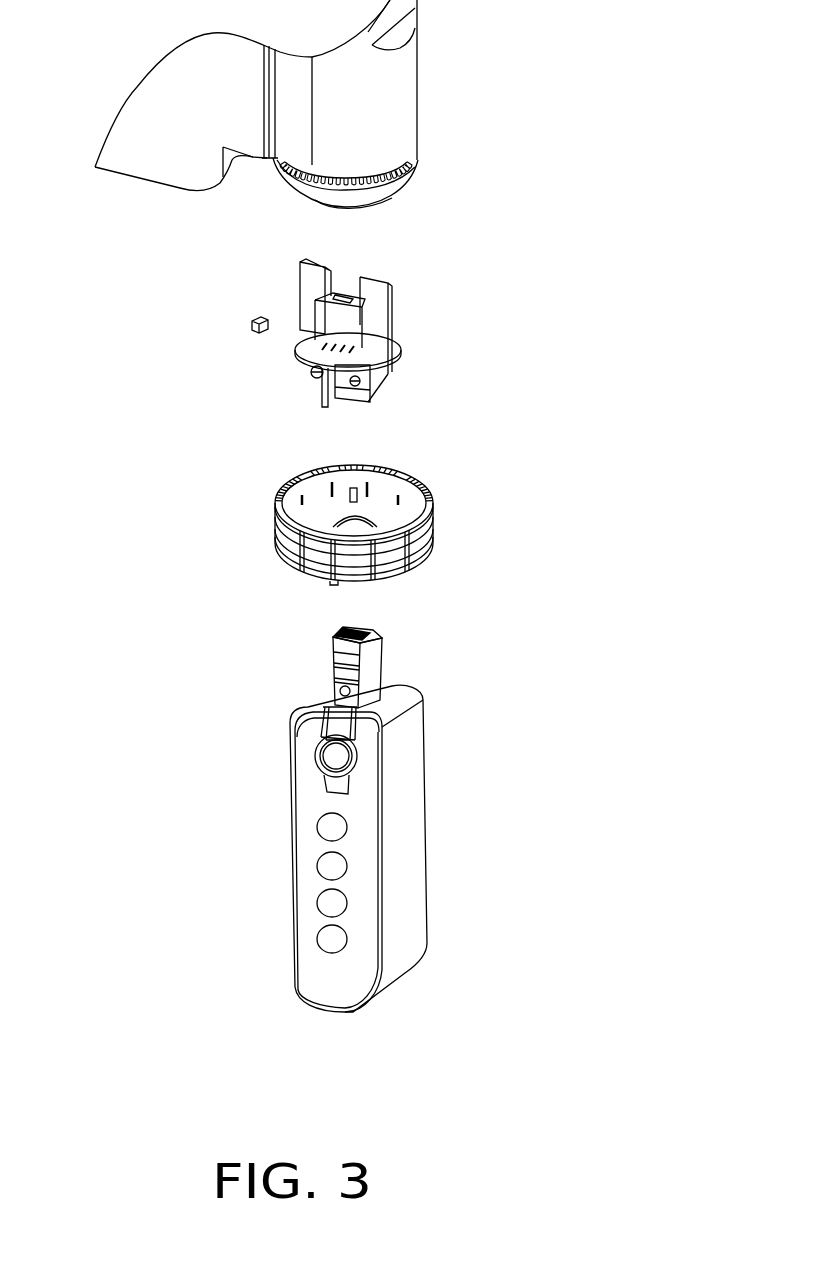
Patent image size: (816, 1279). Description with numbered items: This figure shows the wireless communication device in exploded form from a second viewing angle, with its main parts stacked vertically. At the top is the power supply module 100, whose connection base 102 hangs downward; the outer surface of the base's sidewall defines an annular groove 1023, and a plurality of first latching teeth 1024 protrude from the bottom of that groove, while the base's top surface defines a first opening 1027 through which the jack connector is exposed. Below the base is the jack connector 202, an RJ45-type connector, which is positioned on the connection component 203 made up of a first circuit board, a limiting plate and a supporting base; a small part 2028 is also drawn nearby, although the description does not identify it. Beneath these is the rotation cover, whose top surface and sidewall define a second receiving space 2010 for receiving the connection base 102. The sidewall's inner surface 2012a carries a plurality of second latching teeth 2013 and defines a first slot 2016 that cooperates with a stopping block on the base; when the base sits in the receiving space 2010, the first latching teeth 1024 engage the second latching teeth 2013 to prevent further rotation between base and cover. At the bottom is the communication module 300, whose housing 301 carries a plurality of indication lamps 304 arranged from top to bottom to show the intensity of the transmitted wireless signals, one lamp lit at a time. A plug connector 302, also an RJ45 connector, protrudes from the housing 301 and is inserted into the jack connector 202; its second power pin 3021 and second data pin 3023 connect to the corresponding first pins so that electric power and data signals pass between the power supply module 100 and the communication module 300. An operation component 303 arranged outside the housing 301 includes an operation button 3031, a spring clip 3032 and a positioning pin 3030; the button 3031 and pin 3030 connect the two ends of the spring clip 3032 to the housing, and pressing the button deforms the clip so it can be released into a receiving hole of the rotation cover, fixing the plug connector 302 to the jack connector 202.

The power supply module 100 is at (402, 95).
The connection base 102 is at (395, 204).
The annular groove 1023 is at (404, 163).
The first latching teeth 1024 is at (392, 172).
The first opening 1027 is at (322, 202).
The screw 2028 is at (257, 317).
The connection component 203 is at (380, 348).
The jack connector 202 is at (387, 378).
The second receiving space 2010 is at (366, 518).
The second latching teeth 2013 is at (306, 472).
The inner surface 2012a is at (289, 480).
The first slot 2016 is at (357, 492).
The plug connector 302 is at (382, 666).
The second power pin 3021 is at (353, 630).
The second data pin 3023 is at (370, 632).
The positioning pin 3030 is at (340, 690).
The spring clip 3032 is at (342, 730).
The operation button 3031 is at (333, 755).
The operation component 303 is at (322, 777).
The communication module 300 is at (294, 985).
The housing 301 is at (305, 862).
The indication lamps 304 is at (325, 905).